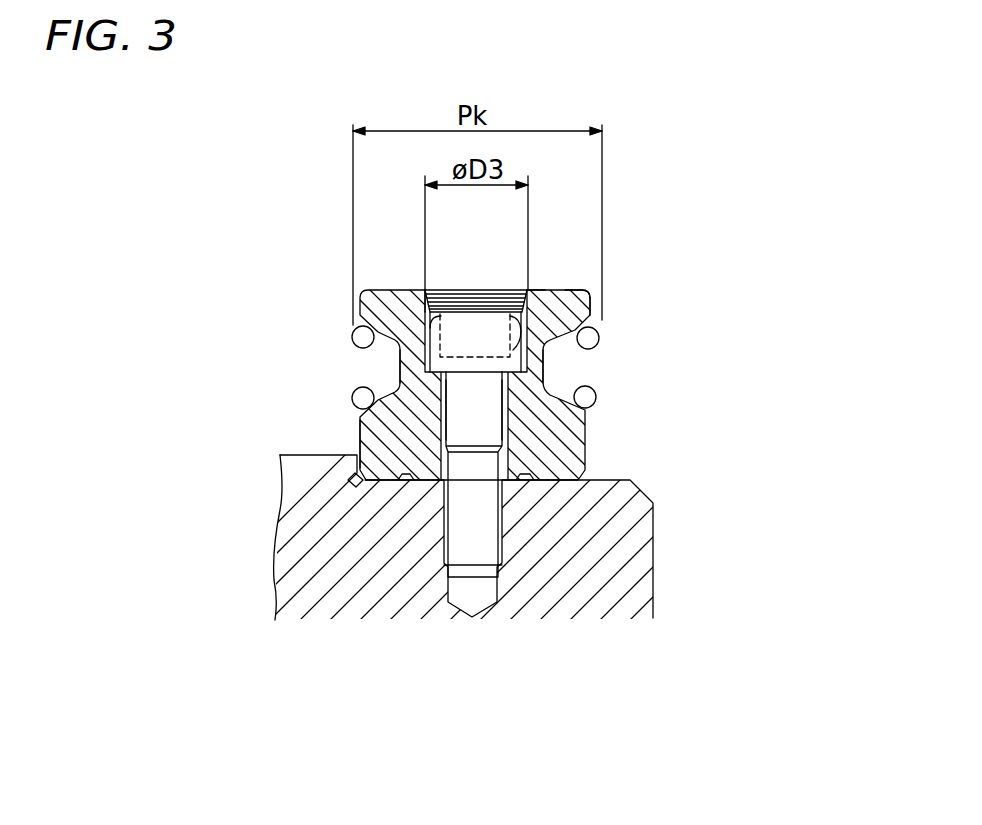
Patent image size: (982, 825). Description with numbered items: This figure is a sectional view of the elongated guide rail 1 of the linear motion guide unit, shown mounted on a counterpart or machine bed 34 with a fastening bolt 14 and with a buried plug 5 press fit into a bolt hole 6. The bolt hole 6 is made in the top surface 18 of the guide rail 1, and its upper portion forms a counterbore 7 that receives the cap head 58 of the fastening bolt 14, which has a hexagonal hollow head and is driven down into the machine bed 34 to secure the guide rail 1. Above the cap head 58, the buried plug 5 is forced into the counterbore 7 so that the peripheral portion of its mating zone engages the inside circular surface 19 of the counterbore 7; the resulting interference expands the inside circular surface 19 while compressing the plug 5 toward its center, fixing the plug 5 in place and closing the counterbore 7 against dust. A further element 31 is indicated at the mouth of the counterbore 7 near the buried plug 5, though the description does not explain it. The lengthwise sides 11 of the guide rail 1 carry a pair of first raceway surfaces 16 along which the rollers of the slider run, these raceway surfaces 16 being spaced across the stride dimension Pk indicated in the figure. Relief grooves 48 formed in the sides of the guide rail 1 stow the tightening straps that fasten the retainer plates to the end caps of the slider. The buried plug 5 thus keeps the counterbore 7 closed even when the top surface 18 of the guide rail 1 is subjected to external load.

The guide rail 1 is at (382, 307).
The buried plug 5 is at (465, 308).
The bolt hole 6 is at (452, 410).
The counterbore 7 is at (530, 289).
The lengthwise sides 11 is at (590, 308).
The fastening bolt 14 is at (487, 428).
The first raceway surfaces 16 is at (352, 337).
The top surface 18 is at (570, 290).
The inside circular surface 19 is at (425, 290).
The thread 31 is at (485, 290).
The machine bed 34 is at (397, 578).
The relief grooves 48 is at (400, 368).
The cap head 58 is at (487, 323).